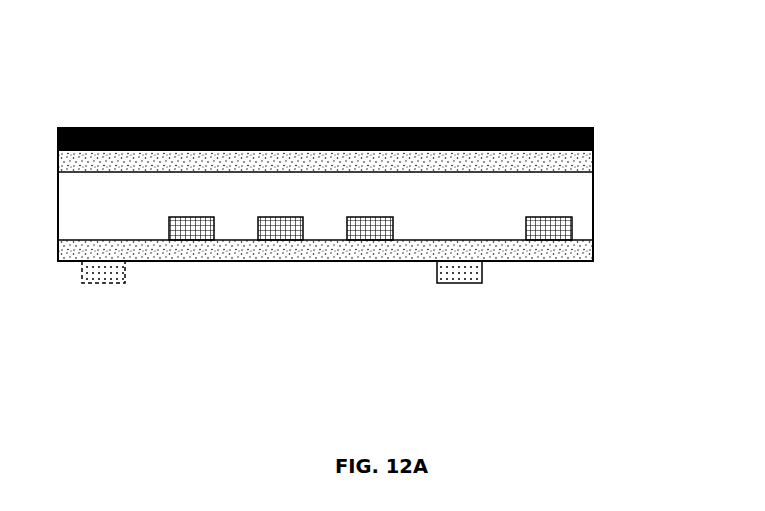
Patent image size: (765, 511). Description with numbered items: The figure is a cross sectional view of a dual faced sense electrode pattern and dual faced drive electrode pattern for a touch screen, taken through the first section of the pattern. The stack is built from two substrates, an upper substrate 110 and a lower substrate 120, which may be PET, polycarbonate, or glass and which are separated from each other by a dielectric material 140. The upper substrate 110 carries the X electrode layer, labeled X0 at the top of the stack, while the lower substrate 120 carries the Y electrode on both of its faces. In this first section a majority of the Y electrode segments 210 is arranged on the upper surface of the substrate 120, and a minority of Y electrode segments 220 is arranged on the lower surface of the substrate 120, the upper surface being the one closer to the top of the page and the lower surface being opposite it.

The substrate 110 is at (597, 160).
The dielectric material 140 is at (597, 205).
The substrate 120 is at (597, 247).
The Y electrode segments 210 is at (192, 240).
The Y electrode segments 220 is at (98, 283).
The X0 direction/position marker X0 is at (101, 128).